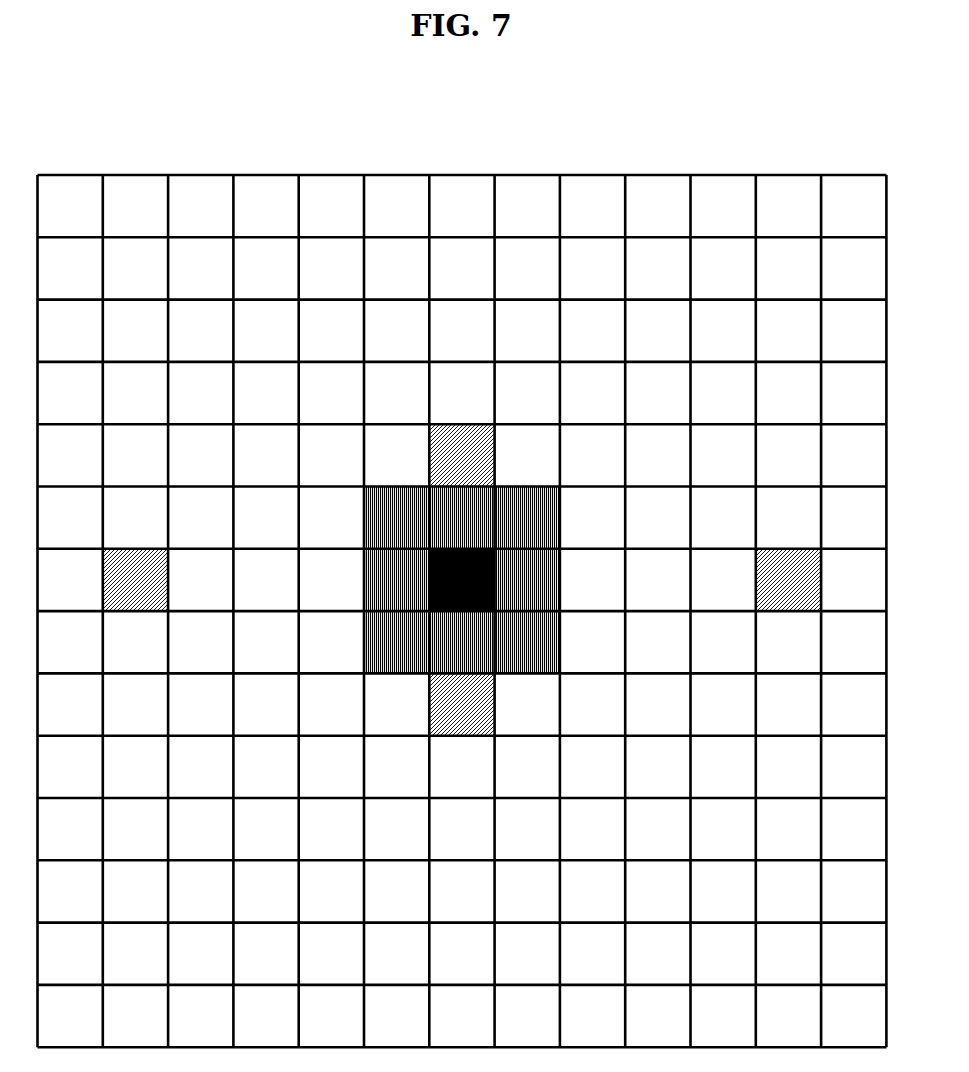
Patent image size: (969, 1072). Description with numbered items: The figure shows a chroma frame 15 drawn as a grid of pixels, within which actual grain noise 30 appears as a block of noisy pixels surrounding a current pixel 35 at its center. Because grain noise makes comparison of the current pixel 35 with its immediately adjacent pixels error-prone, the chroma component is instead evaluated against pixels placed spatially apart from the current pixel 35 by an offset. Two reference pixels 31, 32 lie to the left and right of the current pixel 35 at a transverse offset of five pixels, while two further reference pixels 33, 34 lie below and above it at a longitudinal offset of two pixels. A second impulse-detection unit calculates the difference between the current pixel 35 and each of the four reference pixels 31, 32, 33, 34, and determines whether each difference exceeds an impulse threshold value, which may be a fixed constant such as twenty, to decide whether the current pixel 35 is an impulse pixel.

The chroma frame 15 is at (517, 141).
The actual grain noise 30 is at (537, 485).
The reference pixel 31 is at (135, 546).
The reference pixel 32 is at (802, 546).
The reference pixel 33 is at (460, 737).
The reference pixel 34 is at (465, 423).
The current pixel 35 is at (462, 546).